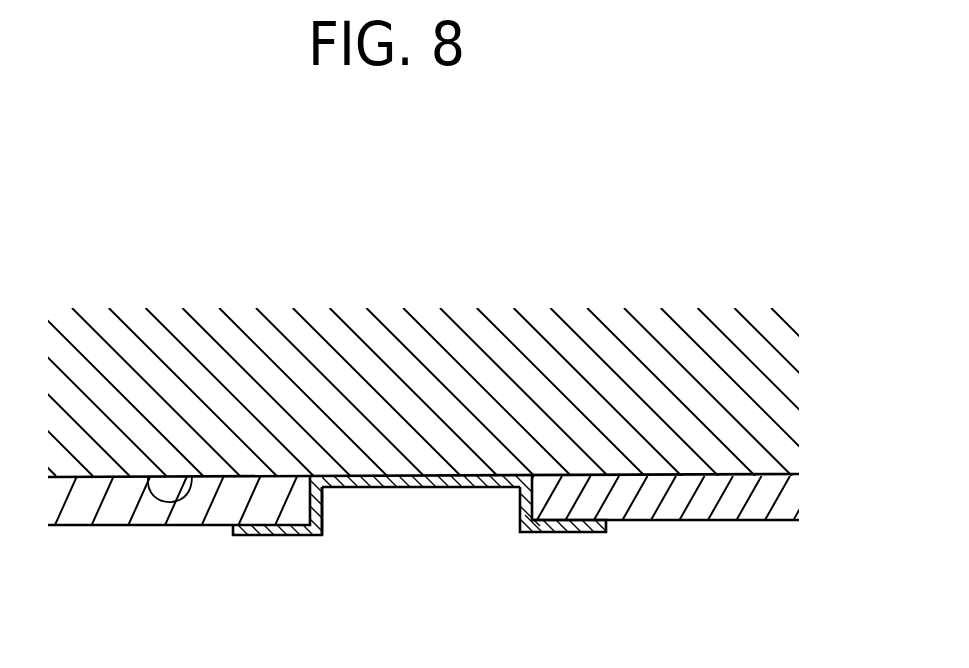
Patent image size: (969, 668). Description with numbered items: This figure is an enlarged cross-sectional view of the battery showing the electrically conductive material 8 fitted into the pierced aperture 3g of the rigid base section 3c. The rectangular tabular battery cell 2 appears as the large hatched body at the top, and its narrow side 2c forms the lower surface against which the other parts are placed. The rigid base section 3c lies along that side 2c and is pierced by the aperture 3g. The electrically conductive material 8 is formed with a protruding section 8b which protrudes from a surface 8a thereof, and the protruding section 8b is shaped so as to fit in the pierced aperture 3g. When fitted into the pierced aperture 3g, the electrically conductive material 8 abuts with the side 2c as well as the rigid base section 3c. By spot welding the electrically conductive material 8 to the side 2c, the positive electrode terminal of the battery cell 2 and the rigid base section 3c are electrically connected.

The battery cell 2 is at (785, 397).
The side 2c is at (148, 476).
The rigid base section 3c is at (103, 524).
The pierced aperture 3g is at (323, 508).
The electrically conductive material 8 is at (560, 537).
The surface 8a is at (262, 525).
The protruding section 8b is at (432, 488).